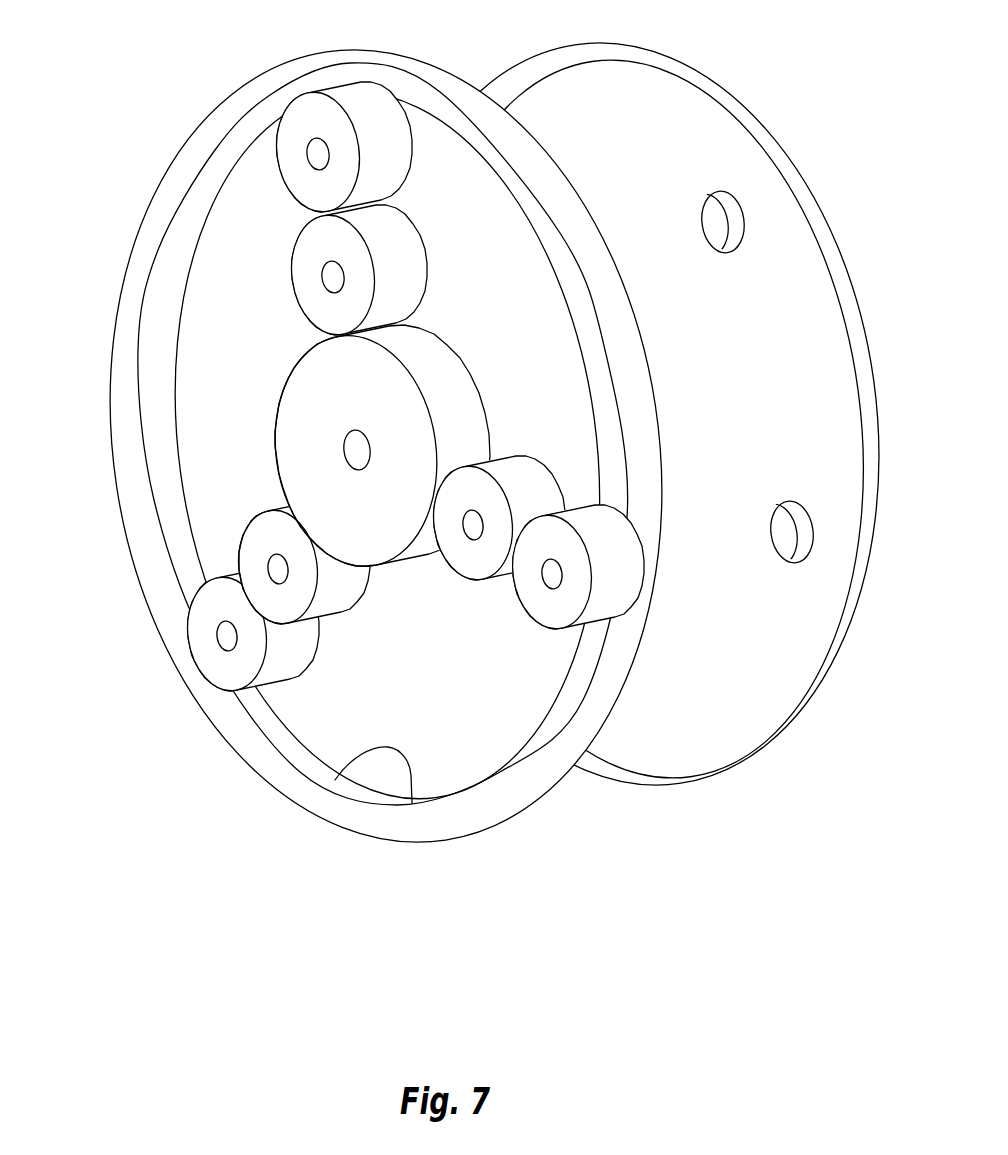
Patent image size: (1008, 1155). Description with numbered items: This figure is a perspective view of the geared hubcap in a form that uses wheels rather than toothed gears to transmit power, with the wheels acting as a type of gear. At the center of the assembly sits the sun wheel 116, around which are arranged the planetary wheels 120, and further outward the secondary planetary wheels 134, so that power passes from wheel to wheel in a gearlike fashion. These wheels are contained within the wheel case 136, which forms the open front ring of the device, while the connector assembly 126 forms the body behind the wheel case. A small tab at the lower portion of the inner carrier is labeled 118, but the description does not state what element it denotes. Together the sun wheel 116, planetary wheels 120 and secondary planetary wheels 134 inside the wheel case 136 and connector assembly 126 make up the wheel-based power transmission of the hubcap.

The sun wheel 116 is at (303, 432).
The carrier plate tab 118 is at (335, 780).
The planetary wheels 120 is at (480, 565).
The connector assembly 126 is at (762, 662).
The secondary planetary wheels 134 is at (560, 617).
The wheel case 136 is at (533, 797).